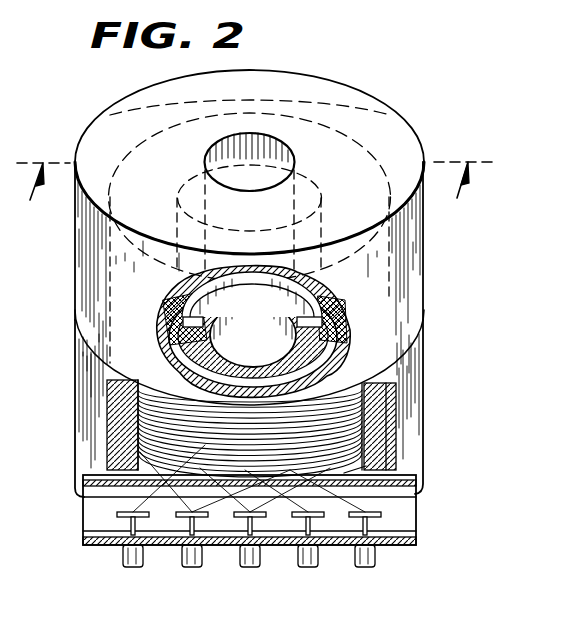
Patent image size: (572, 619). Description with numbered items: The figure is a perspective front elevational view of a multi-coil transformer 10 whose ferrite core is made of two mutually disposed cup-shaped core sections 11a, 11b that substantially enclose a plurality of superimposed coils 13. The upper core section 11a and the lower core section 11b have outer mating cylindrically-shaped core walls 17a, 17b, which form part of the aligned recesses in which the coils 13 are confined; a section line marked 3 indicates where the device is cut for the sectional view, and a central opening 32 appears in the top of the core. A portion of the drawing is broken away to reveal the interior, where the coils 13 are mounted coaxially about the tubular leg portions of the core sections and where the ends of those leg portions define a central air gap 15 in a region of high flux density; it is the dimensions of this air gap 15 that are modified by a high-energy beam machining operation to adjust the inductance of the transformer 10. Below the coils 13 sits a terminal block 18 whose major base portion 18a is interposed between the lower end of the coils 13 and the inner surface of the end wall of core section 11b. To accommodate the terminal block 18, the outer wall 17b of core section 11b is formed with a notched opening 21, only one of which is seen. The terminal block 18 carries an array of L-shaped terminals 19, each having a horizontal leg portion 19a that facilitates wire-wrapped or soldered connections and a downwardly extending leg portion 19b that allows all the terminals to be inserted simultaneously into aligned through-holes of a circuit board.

The transformer 10 is at (351, 72).
The central bore 32 is at (250, 136).
The section line 3- 3 is at (254, 198).
The outer core wall 17a is at (80, 260).
The cup-shaped core section 11a is at (425, 237).
The outer core wall 17b is at (87, 395).
The cup-shaped core section 11b is at (424, 402).
The notched opening 21 is at (368, 414).
The coil 13 is at (157, 417).
The air gap 15 is at (197, 323).
The terminal block 18 is at (82, 517).
The major base portion 18a is at (344, 473).
The terminal 19 is at (120, 548).
The horizontal leg portion 19a is at (190, 522).
The vertically extending leg portion 19b is at (301, 553).